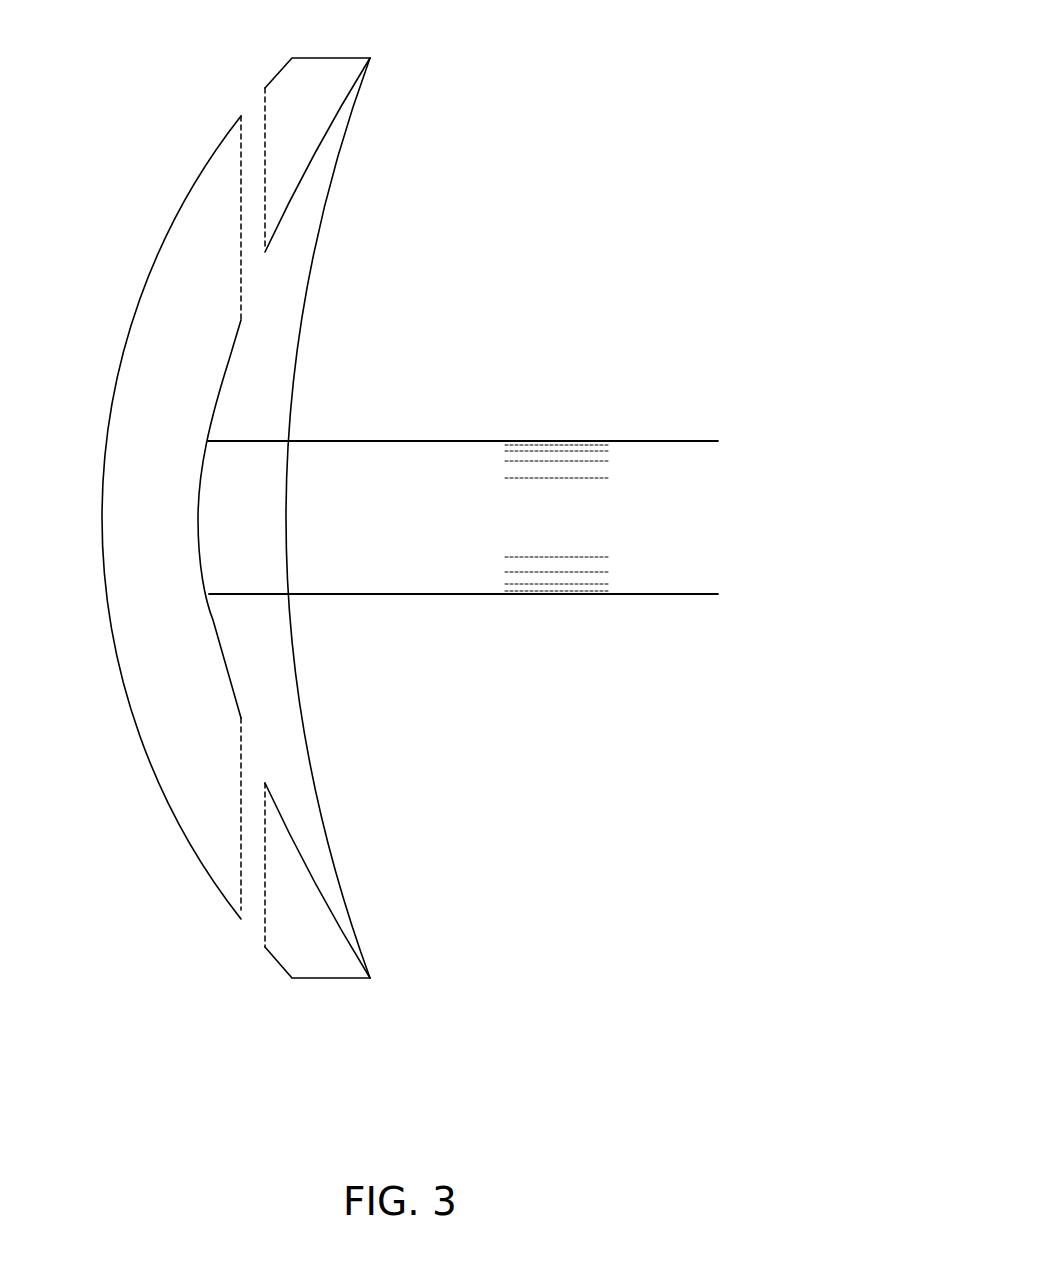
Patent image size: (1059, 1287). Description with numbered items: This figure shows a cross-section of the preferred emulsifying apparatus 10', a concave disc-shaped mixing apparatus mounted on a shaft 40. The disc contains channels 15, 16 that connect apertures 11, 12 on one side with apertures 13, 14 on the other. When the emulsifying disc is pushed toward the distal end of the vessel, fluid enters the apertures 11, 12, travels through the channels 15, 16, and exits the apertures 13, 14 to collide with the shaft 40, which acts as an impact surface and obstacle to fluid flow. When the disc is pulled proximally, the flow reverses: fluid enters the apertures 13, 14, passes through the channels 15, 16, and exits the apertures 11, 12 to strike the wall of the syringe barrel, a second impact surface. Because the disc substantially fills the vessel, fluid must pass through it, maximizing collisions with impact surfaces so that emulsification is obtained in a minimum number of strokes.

The emulsifying apparatus 10' is at (326, 518).
The aperture 11 is at (245, 108).
The aperture 12 is at (246, 927).
The aperture 13 is at (261, 754).
The aperture 14 is at (258, 275).
The channel 15 is at (253, 157).
The channel 16 is at (252, 863).
The shaft 40 is at (476, 441).